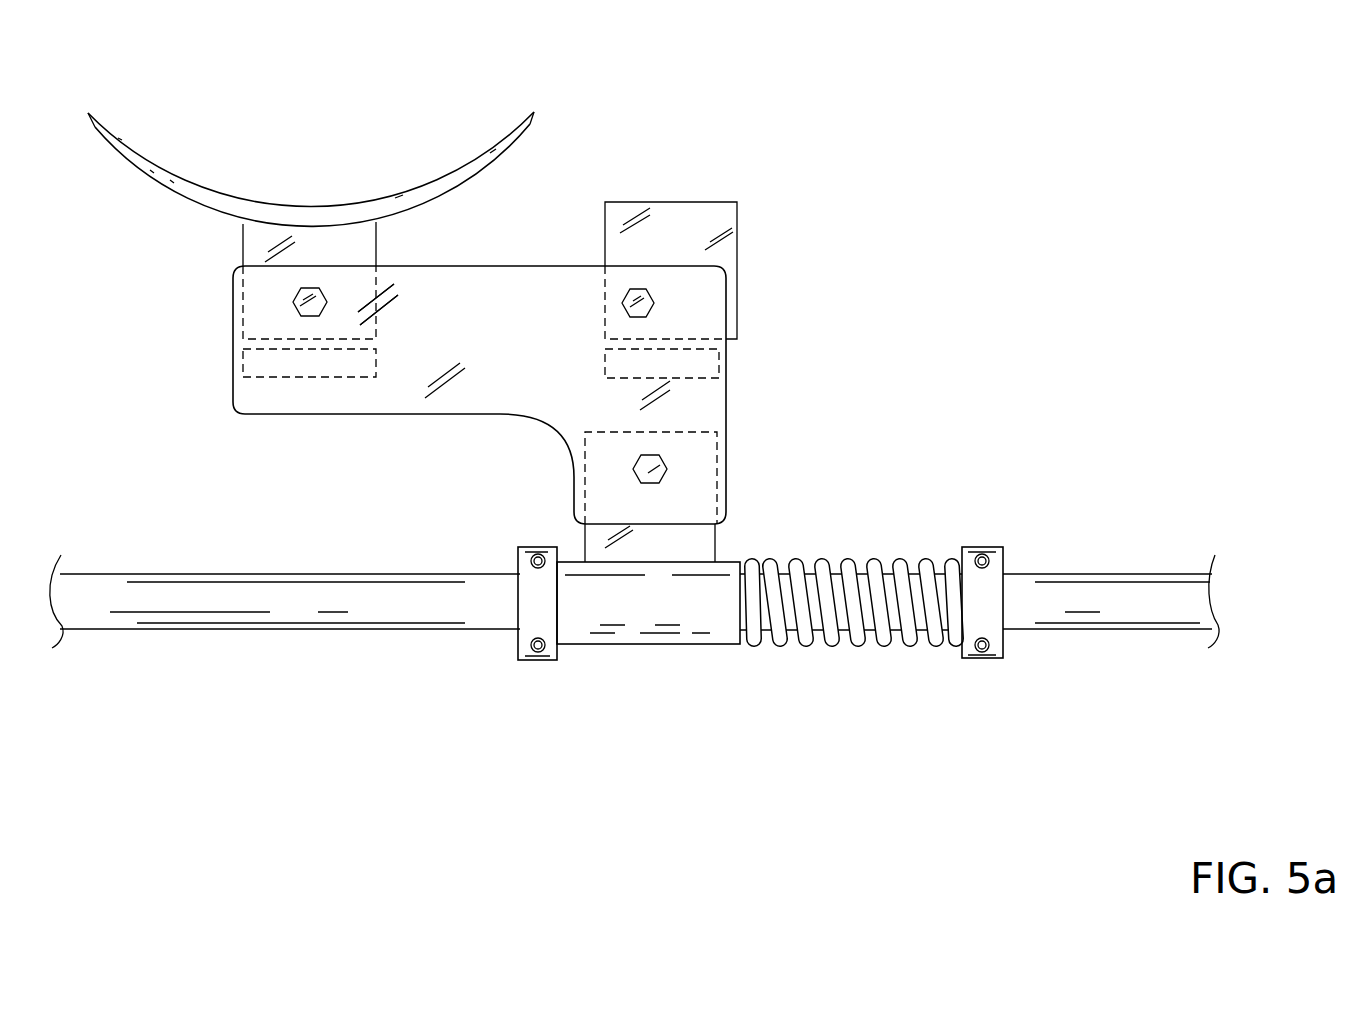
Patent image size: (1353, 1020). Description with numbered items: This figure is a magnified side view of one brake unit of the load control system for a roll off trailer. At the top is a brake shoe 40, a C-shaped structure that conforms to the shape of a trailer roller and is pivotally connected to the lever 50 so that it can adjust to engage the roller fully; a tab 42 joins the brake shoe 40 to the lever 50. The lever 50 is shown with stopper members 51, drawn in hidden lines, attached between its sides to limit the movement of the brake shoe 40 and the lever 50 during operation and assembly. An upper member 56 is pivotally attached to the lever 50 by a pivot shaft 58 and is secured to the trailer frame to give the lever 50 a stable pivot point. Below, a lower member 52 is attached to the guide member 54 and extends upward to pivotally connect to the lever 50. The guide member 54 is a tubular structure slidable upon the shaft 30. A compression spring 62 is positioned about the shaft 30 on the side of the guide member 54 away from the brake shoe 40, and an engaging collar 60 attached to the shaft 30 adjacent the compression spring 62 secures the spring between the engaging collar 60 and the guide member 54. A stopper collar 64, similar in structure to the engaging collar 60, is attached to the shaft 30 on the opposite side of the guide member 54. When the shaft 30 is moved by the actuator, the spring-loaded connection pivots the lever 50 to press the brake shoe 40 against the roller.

The shaft 30 is at (413, 605).
The brake shoe 40 is at (215, 193).
The upper mounting tab 42 is at (358, 252).
The lever 50 is at (497, 385).
The stopper member 51 is at (266, 377).
The lower member 52 is at (695, 543).
The guide member 54 is at (640, 613).
The upper member 56 is at (697, 218).
The pivot shaft 58 is at (655, 300).
The engaging collar 60 is at (983, 617).
The compression spring 62 is at (870, 567).
The stopper collar 64 is at (532, 625).